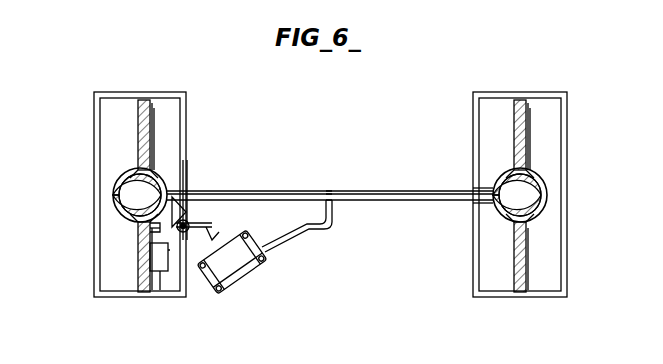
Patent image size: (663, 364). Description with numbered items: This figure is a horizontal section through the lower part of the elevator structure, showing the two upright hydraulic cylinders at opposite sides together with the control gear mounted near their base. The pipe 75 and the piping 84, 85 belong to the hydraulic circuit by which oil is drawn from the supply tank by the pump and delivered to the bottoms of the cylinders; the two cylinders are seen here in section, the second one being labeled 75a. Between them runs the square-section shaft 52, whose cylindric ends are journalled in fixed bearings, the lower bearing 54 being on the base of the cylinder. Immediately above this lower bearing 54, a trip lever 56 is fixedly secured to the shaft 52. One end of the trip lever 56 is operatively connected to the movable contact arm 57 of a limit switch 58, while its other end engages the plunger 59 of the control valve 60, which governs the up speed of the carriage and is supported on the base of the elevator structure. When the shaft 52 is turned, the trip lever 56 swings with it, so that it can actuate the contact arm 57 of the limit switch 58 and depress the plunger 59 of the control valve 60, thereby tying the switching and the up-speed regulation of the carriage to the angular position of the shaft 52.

The pipe 75 is at (113, 194).
The wheel housing 75a is at (547, 194).
The piping 84 is at (268, 191).
The piping 85 is at (421, 191).
The shaft 52 is at (188, 200).
The bearing 54 is at (186, 182).
The trip lever 56 is at (196, 226).
The movable contact arm 57 is at (150, 230).
The limit switch 58 is at (170, 275).
The plunger 59 is at (280, 226).
The control valve 60 is at (235, 272).